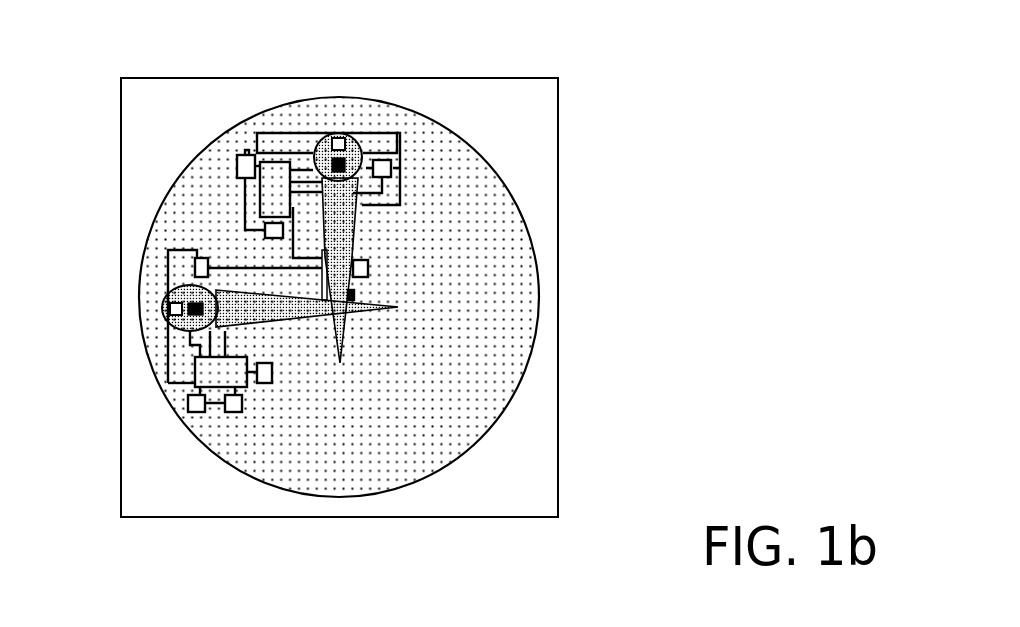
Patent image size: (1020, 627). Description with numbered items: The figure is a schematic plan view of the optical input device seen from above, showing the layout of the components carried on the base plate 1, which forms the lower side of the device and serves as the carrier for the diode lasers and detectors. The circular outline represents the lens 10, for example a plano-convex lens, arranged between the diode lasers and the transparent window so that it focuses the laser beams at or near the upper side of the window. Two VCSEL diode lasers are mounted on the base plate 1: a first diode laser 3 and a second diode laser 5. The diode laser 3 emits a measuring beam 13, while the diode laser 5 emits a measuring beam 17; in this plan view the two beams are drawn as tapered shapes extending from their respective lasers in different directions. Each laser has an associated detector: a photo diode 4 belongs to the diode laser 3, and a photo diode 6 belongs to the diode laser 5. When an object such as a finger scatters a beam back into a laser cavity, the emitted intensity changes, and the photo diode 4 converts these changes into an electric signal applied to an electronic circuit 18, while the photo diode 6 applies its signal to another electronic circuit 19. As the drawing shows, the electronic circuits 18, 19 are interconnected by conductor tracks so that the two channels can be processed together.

The base plate 1 is at (538, 122).
The lens 10 is at (438, 140).
The diode laser 3 is at (338, 133).
The photo diode 4 is at (331, 158).
The electronic circuit 18 is at (383, 160).
The measuring beam 13 is at (360, 214).
The measuring beam 17 is at (281, 320).
The second diode laser 5 is at (162, 306).
The detector 6 is at (215, 330).
The electronic circuit 19 is at (170, 258).